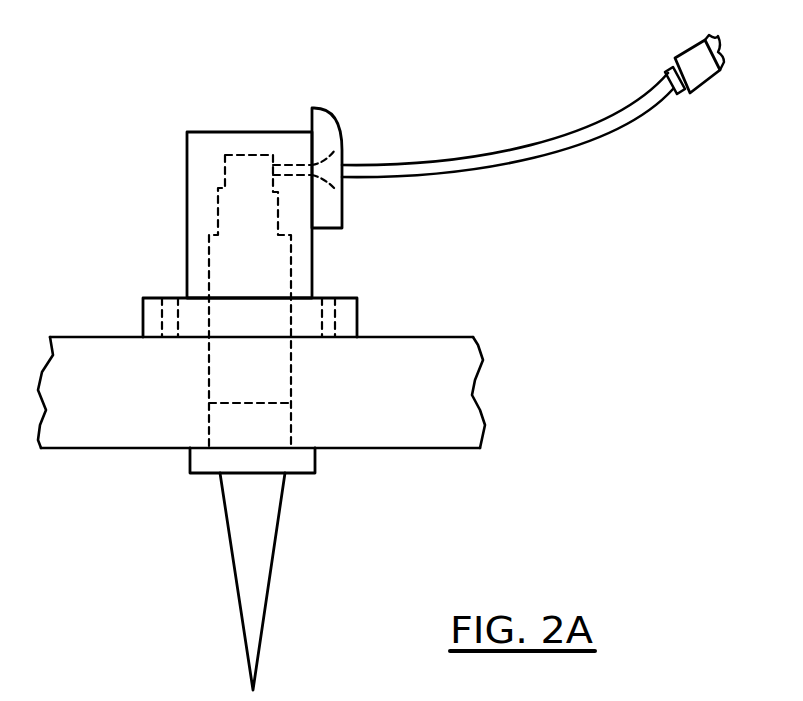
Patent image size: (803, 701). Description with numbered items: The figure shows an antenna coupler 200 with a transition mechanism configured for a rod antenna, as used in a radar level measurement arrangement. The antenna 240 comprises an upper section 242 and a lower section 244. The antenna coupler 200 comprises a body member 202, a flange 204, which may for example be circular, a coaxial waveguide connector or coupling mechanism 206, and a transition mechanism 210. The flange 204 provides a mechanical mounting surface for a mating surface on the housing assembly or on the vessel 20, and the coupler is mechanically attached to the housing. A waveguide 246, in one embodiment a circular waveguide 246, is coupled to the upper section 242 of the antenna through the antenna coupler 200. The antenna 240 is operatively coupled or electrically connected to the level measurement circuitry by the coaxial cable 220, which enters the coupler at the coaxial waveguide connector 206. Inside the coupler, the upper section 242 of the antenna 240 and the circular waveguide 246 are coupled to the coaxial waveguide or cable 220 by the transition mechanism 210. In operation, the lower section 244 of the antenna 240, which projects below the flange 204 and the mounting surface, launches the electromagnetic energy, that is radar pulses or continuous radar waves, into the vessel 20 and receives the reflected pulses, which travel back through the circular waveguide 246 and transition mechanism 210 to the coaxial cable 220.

The vessel 20 is at (452, 352).
The antenna coupler 200 is at (286, 70).
The body member 202 is at (222, 132).
The flange 204 is at (358, 313).
The coaxial waveguide connector 206 is at (338, 133).
The transition mechanism 210 is at (269, 278).
The coaxial cable 220 is at (517, 160).
The antenna 240 is at (306, 526).
The upper section 242 is at (275, 420).
The lower section 244 is at (262, 567).
The circular waveguide 246 is at (232, 381).